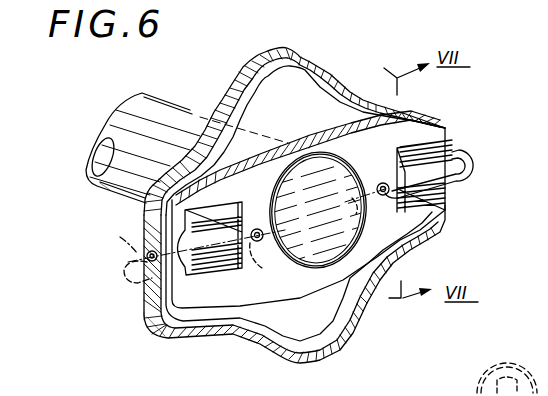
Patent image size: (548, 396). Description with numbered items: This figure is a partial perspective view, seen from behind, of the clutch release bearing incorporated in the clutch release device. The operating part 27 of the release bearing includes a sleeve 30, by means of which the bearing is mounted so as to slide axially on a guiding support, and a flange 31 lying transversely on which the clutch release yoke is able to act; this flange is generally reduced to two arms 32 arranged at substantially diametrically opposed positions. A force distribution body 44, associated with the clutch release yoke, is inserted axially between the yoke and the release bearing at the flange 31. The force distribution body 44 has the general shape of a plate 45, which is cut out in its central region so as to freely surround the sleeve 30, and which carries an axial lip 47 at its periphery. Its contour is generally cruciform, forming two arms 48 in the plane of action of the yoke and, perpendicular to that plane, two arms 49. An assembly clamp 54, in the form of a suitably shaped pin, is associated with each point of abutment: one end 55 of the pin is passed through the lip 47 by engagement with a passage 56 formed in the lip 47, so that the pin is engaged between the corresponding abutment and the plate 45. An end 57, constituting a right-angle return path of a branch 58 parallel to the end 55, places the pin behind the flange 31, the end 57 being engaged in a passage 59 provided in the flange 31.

The operating part 27 is at (92, 192).
The sleeve 30 is at (186, 116).
The flange 31 is at (326, 142).
The arms 32 is at (447, 211).
The force distribution body 44 is at (130, 320).
The plate 45 is at (281, 125).
The axial lip 47 is at (296, 50).
The arms 48 is at (275, 66).
The arms 49 is at (432, 237).
The assembly clamp 54 is at (483, 140).
The pin end 55 is at (456, 150).
The passage 56 is at (149, 250).
The end 57 is at (366, 198).
The branch 58 is at (360, 222).
The passage 59 is at (259, 228).